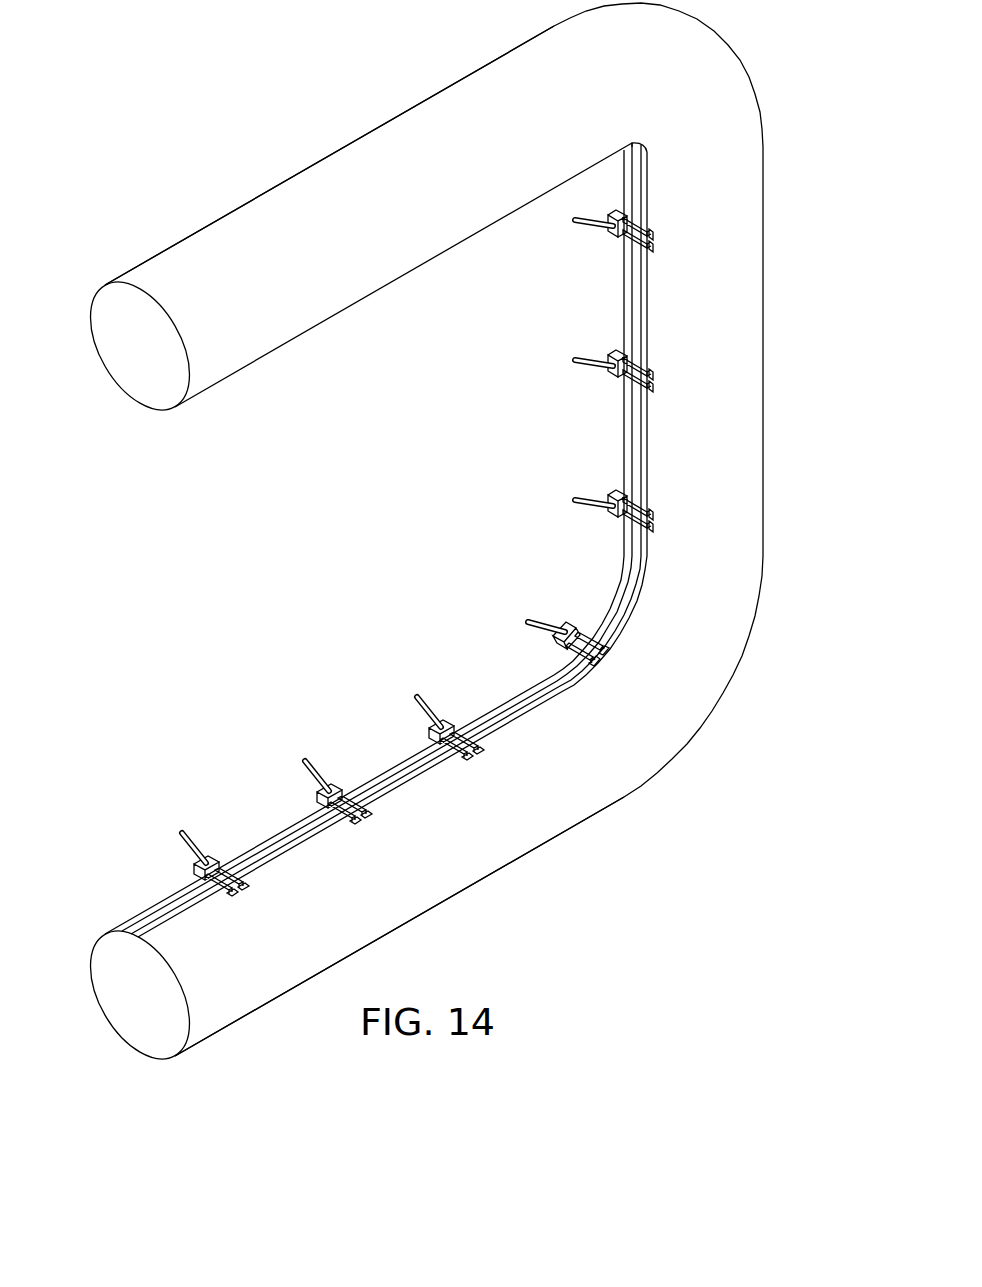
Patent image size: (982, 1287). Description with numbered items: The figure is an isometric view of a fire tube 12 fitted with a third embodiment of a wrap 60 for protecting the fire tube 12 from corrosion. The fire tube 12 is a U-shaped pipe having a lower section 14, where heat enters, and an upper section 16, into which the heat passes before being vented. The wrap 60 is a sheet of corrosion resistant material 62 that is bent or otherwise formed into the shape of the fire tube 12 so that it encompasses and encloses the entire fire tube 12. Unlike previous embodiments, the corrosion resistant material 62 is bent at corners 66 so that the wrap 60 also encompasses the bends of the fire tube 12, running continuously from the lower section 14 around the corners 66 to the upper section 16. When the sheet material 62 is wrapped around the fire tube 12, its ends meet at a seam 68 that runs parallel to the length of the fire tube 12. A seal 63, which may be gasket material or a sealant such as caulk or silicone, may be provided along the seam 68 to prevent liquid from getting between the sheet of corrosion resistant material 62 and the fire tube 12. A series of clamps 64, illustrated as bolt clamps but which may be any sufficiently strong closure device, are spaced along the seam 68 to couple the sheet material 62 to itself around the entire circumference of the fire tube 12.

The wrap 60 is at (163, 182).
The corrosion resistant material 62 is at (376, 266).
The upper section 16 is at (540, 58).
The corners 66 is at (750, 105).
The lower section 14 is at (147, 921).
The fire tube 12 is at (617, 586).
The seal 63 is at (532, 690).
The seam 68 is at (387, 770).
The clamps 64 is at (612, 241).